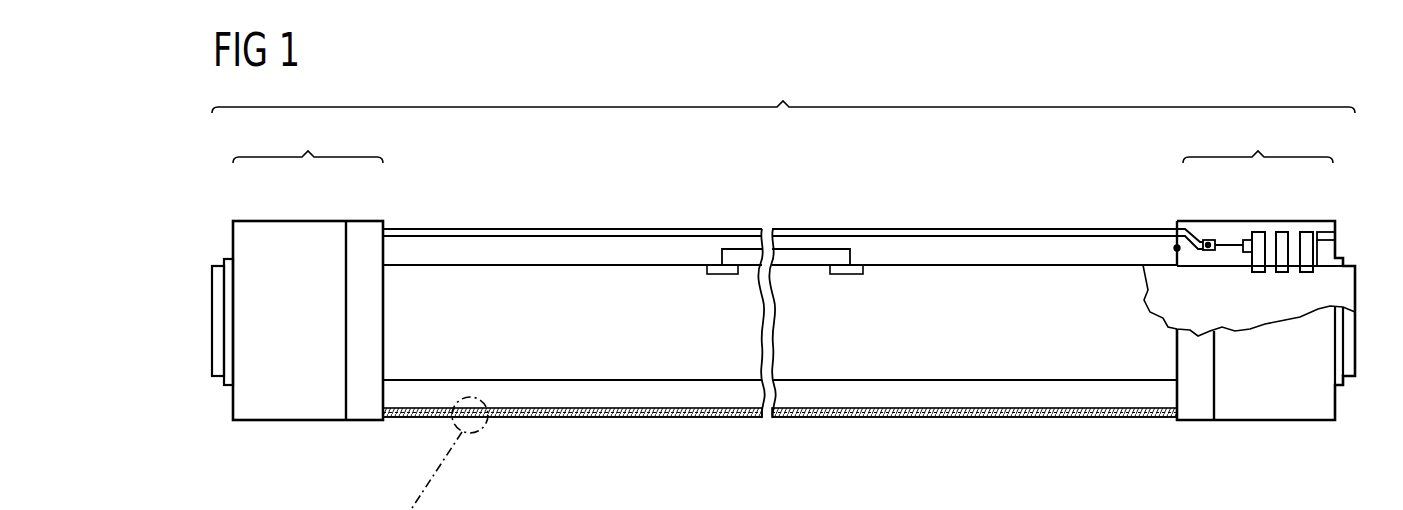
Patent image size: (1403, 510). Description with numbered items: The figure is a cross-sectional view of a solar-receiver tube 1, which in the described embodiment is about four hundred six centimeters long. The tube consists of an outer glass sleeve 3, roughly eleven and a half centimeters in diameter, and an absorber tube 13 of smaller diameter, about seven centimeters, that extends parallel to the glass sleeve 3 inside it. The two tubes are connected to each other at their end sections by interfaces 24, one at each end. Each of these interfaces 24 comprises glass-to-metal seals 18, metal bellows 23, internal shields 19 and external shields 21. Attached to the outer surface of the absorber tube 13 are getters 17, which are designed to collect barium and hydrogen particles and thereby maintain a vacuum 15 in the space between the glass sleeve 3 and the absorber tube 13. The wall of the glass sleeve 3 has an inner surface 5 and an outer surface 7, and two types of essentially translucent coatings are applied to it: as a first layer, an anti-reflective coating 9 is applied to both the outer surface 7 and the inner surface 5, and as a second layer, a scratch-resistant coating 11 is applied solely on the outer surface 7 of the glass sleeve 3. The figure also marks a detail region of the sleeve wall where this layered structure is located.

The solar-receiver tube 1 is at (783, 86).
The glass sleeve 3 is at (590, 229).
The inner surface 5 is at (521, 408).
The outer surface 7 is at (563, 418).
The anti-reflective coating 9 is at (918, 409).
The scratch-resistant coating 11 is at (625, 418).
The absorber tube 13 is at (469, 270).
The vacuum 15 is at (925, 250).
The getters 17 is at (822, 258).
The glass-to-metal seals 18 is at (1210, 240).
The internal shields 19 is at (1177, 245).
The external shields 21 is at (366, 236).
The metal bellows 23 is at (1305, 242).
The interfaces 24 is at (783, 140).